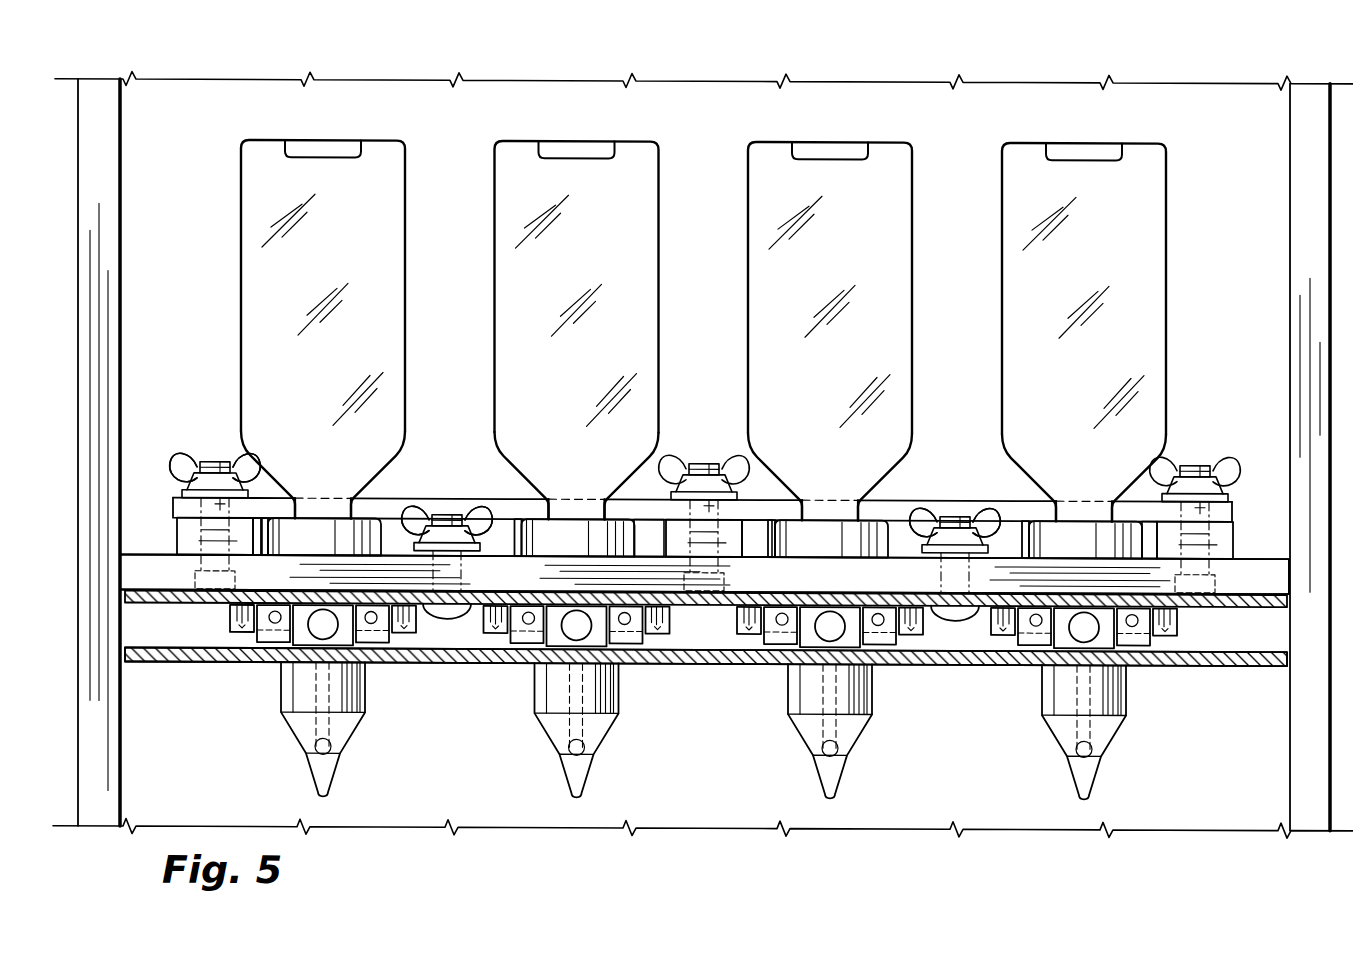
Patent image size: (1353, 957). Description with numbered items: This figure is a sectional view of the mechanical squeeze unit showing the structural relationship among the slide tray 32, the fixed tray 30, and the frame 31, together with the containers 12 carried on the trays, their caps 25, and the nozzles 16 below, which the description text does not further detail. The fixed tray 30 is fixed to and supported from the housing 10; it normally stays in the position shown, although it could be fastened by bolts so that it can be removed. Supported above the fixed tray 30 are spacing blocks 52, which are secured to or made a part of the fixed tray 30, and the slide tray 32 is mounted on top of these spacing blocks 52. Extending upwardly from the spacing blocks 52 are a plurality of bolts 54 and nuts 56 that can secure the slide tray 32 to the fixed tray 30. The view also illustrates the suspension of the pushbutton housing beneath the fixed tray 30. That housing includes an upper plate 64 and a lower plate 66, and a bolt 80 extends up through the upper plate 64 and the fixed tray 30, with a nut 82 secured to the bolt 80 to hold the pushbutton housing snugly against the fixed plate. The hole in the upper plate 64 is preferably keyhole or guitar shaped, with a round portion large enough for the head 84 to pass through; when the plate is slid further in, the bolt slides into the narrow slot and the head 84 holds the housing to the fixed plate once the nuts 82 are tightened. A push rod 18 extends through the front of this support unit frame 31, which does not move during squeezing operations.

The housing 10 is at (78, 143).
The container 12 is at (253, 220).
The dispensing nozzle 16 is at (363, 686).
The push rod 18 is at (312, 626).
The container cap 25 is at (345, 531).
The fixed tray 30 is at (1263, 583).
The frame 31 is at (168, 662).
The slide tray 32 is at (1017, 510).
The spacing blocks 52 is at (175, 527).
The bolts 54 is at (212, 456).
The nuts 56 is at (182, 458).
The upper plate 64 is at (152, 589).
The lower plate 66 is at (200, 663).
The bolt 80 is at (445, 504).
The nut 82 is at (481, 516).
The head 84 is at (452, 613).